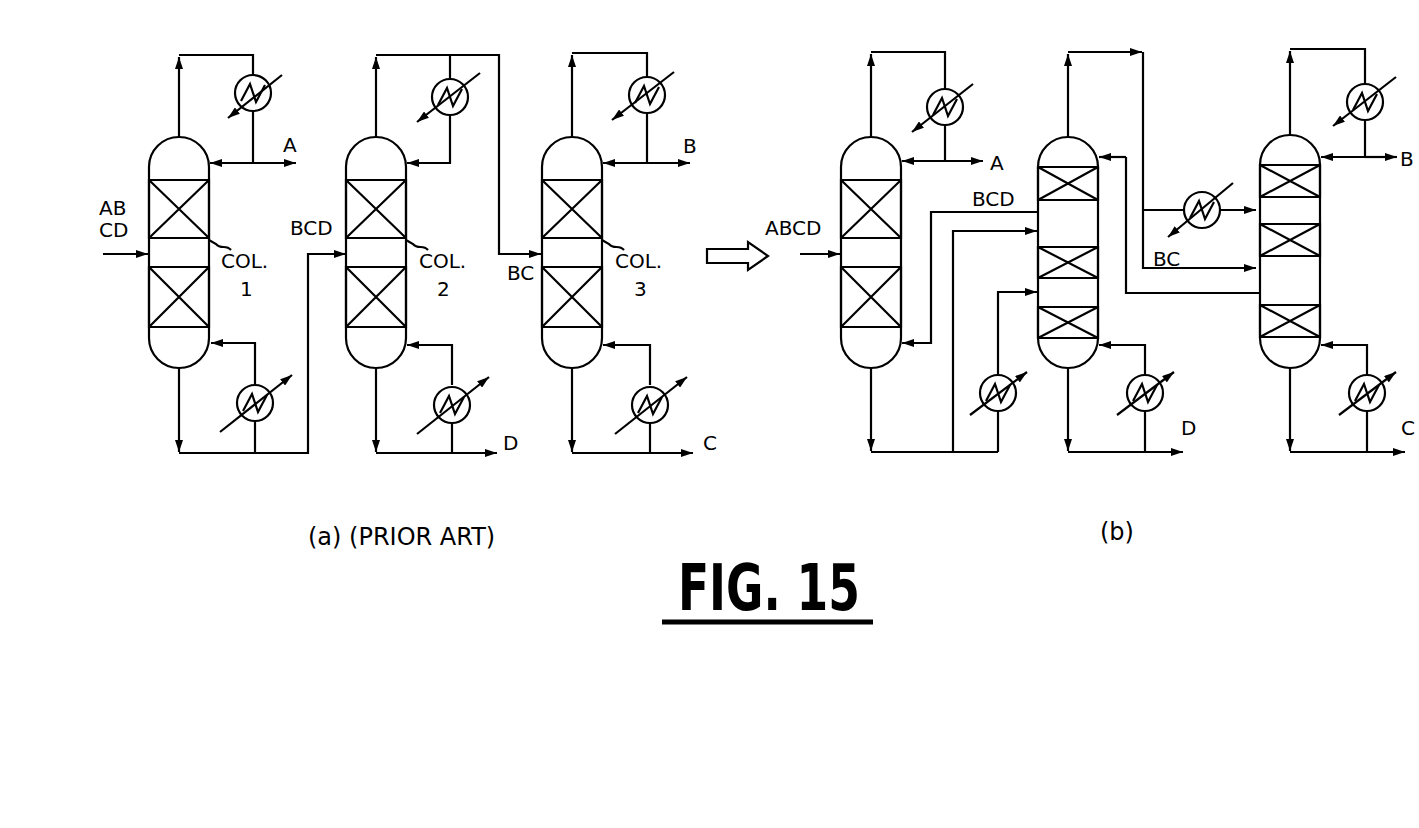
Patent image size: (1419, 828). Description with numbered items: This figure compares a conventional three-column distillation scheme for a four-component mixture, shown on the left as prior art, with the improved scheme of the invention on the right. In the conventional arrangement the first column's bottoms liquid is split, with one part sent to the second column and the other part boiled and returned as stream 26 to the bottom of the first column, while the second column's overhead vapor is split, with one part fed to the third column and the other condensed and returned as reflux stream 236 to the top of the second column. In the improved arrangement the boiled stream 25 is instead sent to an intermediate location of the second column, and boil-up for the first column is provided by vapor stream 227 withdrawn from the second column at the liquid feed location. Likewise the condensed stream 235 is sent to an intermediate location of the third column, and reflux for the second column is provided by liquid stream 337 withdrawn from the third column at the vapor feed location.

The boiled stream 25 is at (998, 315).
The boil-up stream 26 is at (244, 341).
The vapor stream 227 is at (926, 221).
The condensed stream 235 is at (1241, 206).
The reflux stream 236 is at (450, 144).
The liquid stream 337 is at (1182, 294).